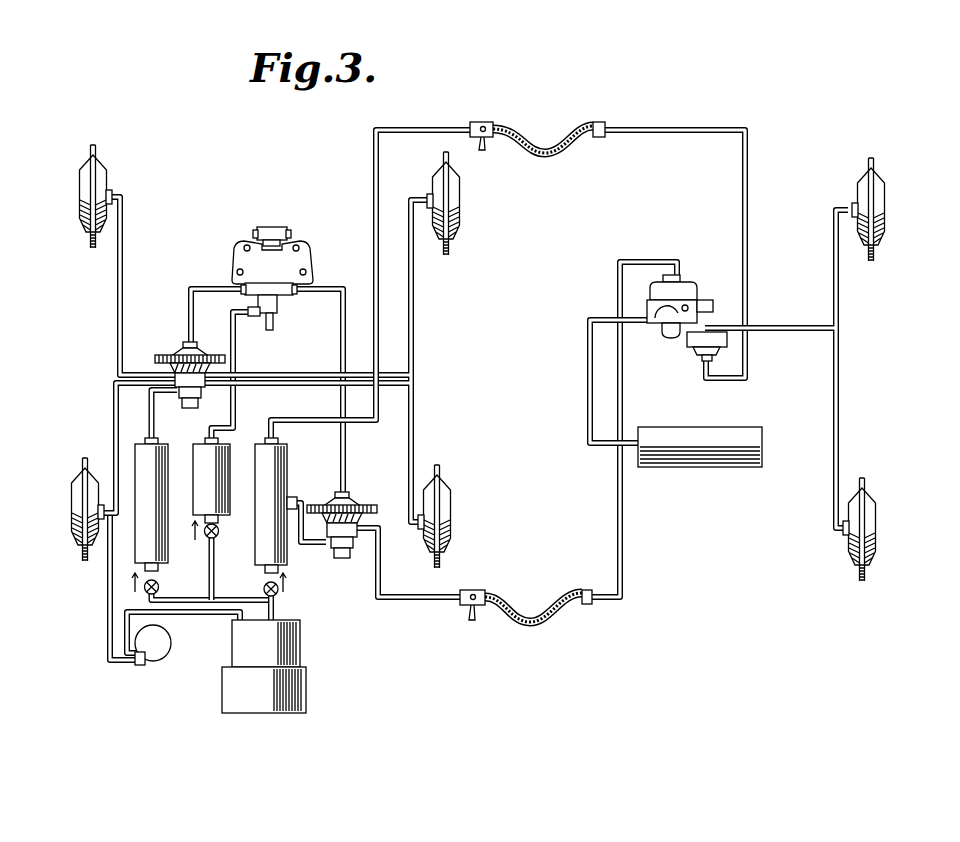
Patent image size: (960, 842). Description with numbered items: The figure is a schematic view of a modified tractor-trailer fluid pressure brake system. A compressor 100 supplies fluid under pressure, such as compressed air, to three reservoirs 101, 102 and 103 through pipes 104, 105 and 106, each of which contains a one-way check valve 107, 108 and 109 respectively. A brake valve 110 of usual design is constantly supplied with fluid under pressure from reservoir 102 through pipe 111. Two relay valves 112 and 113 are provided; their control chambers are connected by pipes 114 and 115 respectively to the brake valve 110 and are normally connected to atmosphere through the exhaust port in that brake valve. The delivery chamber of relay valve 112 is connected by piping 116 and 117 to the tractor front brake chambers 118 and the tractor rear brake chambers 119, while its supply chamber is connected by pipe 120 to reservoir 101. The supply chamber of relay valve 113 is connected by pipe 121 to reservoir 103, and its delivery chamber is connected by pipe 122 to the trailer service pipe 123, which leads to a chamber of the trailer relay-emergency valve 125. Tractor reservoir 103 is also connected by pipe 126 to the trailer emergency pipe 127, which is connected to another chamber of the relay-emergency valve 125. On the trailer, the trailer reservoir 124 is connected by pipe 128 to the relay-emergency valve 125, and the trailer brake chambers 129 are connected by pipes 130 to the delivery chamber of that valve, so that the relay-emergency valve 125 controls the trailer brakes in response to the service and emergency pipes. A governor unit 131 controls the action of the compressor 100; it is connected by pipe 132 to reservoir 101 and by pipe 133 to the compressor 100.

The compressor 100 is at (297, 690).
The reservoir 101 is at (178, 435).
The reservoir 102 is at (230, 450).
The reservoir 103 is at (280, 468).
The pipe 104 is at (178, 598).
The pipe 105 is at (233, 592).
The pipe 106 is at (273, 603).
The one-way check valve 107 is at (142, 590).
The one-way check valve 108 is at (217, 538).
The one-way check valve 109 is at (282, 590).
The brake valve 110 is at (293, 258).
The pipe 111 is at (236, 358).
The relay valve 112 is at (184, 358).
The relay valve 113 is at (368, 494).
The pipe 114 is at (188, 296).
The pipe 115 is at (343, 320).
The piping 116 is at (116, 392).
The piping 117 is at (413, 402).
The tractor front brake chambers 118 is at (82, 201).
The tractor rear brake chambers 119 is at (452, 208).
The pipe 120 is at (150, 415).
The pipe 121 is at (297, 500).
The pipe 122 is at (418, 600).
The trailer service pipe 123 is at (623, 553).
The trailer reservoir 124 is at (712, 433).
The trailer relay-emergency valve 125 is at (680, 290).
The pipe 126 is at (378, 313).
The trailer emergency pipe 127 is at (748, 300).
The pipe 128 is at (590, 412).
The trailer brake chambers 129 is at (880, 218).
The pipes 130 is at (838, 345).
The governor unit 131 is at (162, 675).
The pipe 132 is at (106, 642).
The pipe 133 is at (202, 618).